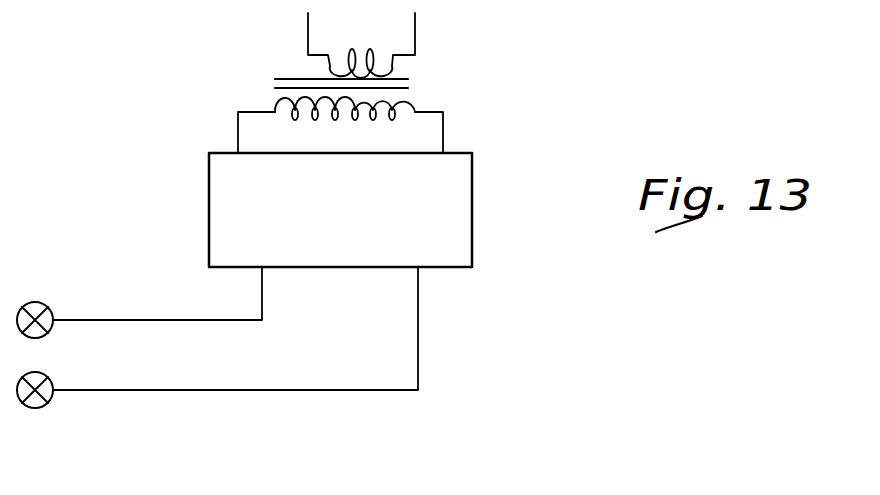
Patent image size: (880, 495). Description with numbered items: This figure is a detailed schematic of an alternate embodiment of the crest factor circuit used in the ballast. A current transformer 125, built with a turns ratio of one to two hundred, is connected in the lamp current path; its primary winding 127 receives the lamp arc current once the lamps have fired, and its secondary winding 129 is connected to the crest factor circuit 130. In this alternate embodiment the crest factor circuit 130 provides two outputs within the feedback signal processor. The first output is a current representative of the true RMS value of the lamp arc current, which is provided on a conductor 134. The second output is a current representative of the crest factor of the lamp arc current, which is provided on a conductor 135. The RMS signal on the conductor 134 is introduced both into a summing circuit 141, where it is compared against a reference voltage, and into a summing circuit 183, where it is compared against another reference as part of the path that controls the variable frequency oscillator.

The current transformer 125 is at (287, 77).
The primary winding 127 is at (394, 70).
The secondary winding 129 is at (418, 99).
The crest factor circuit 130 is at (472, 224).
The conductor 134 is at (182, 318).
The conductor 135 is at (276, 393).
The summing circuit 183 is at (88, 268).
The summing circuit 141 is at (44, 405).